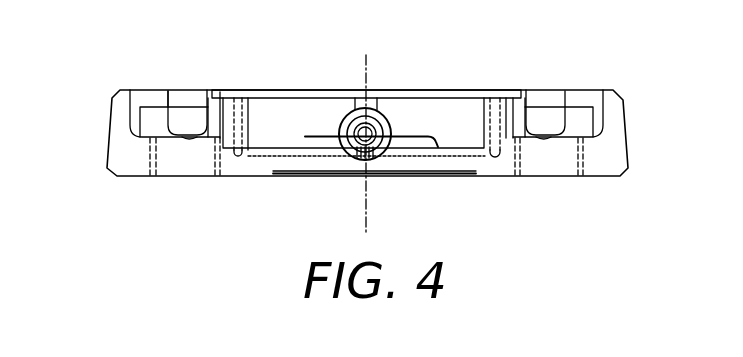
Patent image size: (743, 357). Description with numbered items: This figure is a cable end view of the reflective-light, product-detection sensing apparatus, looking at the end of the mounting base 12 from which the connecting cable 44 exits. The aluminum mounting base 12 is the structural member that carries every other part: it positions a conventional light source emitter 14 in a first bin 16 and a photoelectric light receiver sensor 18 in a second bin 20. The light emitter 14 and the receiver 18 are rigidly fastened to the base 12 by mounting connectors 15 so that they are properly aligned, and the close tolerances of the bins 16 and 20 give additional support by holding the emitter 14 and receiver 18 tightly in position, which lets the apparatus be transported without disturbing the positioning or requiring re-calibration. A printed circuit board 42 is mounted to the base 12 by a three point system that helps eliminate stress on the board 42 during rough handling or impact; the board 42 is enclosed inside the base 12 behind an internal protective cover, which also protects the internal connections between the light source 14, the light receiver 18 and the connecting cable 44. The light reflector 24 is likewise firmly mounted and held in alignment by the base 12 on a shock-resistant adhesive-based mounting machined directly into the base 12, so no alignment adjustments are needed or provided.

The mounting base 12 is at (172, 176).
The light source emitter 14 is at (585, 113).
The mounting connectors 15 is at (148, 168).
The first bin 16 is at (577, 97).
The photoelectric light receiver sensor 18 is at (147, 117).
The second bin 20 is at (162, 92).
The light reflector 24 is at (272, 139).
The printed circuit board 42 is at (430, 137).
The connecting cable 44 is at (347, 145).